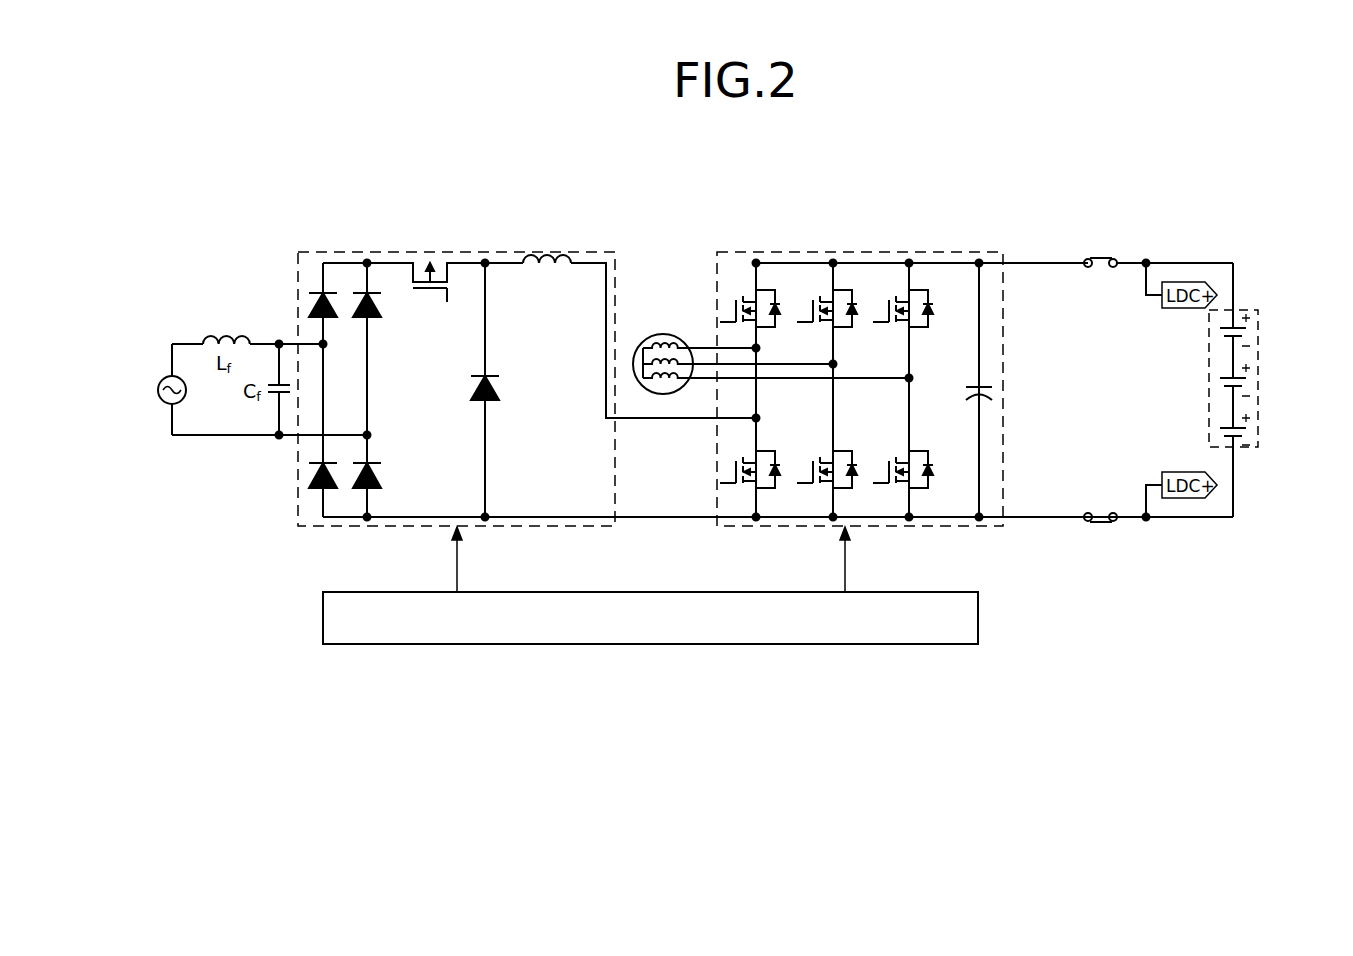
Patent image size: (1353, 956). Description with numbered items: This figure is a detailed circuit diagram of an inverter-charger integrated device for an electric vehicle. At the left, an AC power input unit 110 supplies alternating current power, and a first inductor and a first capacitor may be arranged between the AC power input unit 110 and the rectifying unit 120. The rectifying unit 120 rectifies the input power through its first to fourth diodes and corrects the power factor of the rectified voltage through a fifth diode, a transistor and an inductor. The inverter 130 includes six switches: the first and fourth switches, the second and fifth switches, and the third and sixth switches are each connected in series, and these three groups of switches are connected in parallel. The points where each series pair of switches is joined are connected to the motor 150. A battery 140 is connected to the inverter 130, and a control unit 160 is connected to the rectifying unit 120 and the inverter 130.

The alternating current (AC) power input unit 110 is at (163, 404).
The rectifying unit 120 is at (454, 250).
The inverter 130 is at (848, 250).
The battery 140 is at (1258, 379).
The motor 150 is at (663, 333).
The control unit 160 is at (978, 614).